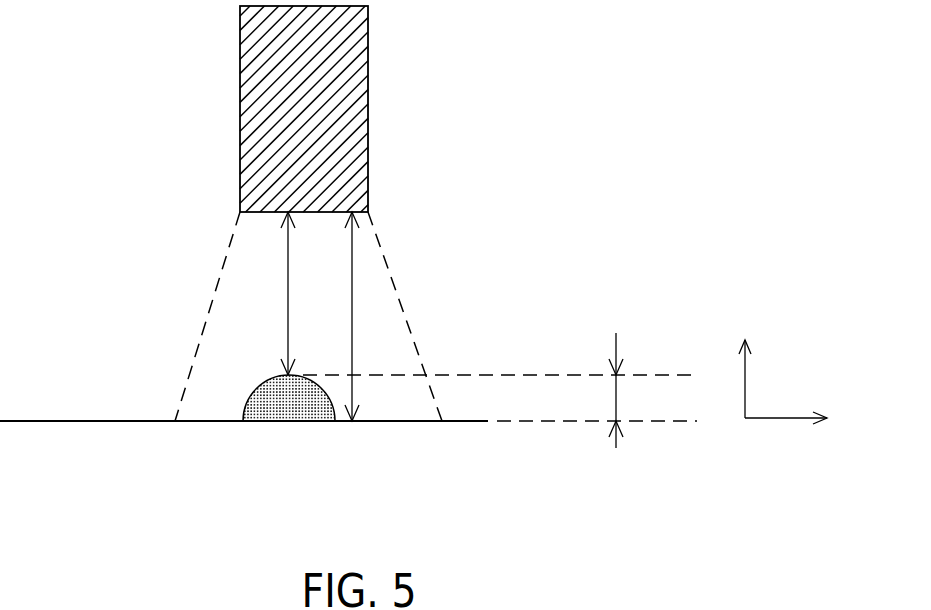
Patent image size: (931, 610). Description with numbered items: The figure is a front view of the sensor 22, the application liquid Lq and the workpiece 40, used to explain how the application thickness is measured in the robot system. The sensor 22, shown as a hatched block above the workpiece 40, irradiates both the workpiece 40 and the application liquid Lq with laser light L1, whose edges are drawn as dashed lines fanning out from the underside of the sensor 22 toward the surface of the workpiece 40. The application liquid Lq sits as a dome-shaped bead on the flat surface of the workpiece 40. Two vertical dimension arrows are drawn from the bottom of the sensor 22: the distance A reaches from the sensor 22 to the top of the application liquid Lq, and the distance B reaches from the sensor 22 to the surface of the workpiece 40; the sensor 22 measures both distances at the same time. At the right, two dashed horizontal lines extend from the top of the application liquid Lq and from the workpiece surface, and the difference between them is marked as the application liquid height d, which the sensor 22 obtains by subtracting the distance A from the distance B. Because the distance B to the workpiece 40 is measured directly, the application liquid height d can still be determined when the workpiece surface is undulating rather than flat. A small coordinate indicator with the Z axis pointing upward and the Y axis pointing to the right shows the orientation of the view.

The sensor 22 is at (358, 93).
The workpiece 40 is at (104, 421).
The laser light L1 is at (380, 259).
The application liquid Lq is at (297, 413).
The distance A is at (274, 293).
The distance B is at (344, 316).
The application liquid height d is at (500, 390).
The Z axis Z is at (745, 366).
The Y axis Y is at (796, 418).